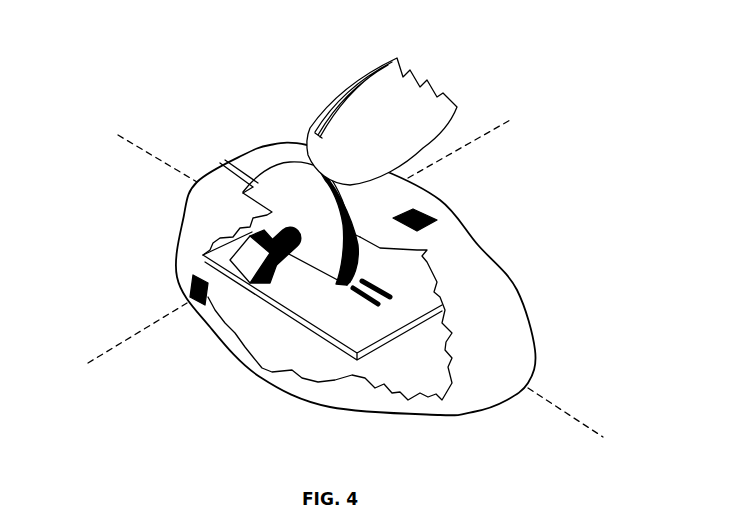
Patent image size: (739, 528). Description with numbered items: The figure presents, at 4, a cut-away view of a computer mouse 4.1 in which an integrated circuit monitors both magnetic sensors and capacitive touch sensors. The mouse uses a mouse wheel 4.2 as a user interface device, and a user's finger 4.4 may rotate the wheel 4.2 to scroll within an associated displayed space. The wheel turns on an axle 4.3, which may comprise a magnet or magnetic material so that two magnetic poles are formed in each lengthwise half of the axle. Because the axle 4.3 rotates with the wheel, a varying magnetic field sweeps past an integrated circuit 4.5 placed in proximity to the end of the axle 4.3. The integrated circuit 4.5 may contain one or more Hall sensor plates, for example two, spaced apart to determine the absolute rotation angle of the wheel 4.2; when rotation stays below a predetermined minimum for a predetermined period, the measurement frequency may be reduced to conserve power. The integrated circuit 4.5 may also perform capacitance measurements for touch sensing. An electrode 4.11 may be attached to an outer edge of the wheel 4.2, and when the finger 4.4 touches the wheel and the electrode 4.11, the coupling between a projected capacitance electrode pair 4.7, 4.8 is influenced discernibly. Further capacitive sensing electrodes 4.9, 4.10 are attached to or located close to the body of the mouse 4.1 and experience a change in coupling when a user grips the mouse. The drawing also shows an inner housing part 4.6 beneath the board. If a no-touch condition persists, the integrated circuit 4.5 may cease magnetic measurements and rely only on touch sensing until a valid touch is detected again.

The cut-away view of computer mouse 4 is at (147, 100).
The computer mouse 4.1 is at (520, 292).
The mouse wheel 4.2 is at (300, 205).
The axle 4.3 is at (288, 258).
The user's finger 4.4 is at (394, 135).
The integrated circuit 4.5 is at (256, 256).
The inner housing part 4.6 is at (393, 337).
The projected capacitance electrode 4.7 is at (362, 300).
The projected capacitance electrode 4.8 is at (380, 285).
The capacitive sensing electrode 4.9 is at (190, 288).
The capacitive sensing electrode 4.10 is at (420, 231).
The electrode 4.11 is at (350, 218).